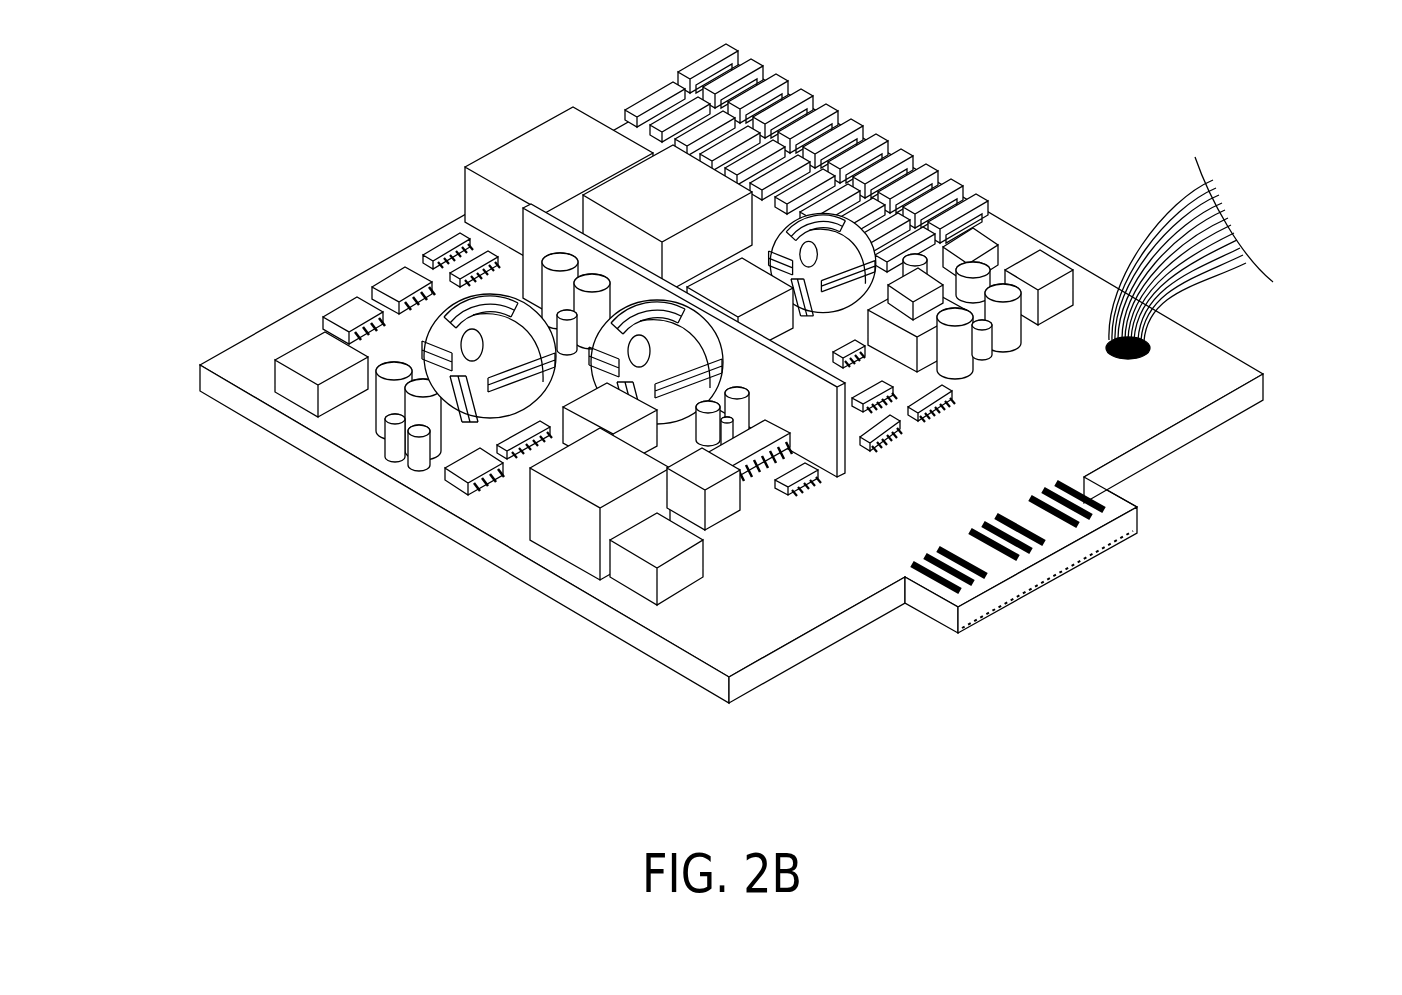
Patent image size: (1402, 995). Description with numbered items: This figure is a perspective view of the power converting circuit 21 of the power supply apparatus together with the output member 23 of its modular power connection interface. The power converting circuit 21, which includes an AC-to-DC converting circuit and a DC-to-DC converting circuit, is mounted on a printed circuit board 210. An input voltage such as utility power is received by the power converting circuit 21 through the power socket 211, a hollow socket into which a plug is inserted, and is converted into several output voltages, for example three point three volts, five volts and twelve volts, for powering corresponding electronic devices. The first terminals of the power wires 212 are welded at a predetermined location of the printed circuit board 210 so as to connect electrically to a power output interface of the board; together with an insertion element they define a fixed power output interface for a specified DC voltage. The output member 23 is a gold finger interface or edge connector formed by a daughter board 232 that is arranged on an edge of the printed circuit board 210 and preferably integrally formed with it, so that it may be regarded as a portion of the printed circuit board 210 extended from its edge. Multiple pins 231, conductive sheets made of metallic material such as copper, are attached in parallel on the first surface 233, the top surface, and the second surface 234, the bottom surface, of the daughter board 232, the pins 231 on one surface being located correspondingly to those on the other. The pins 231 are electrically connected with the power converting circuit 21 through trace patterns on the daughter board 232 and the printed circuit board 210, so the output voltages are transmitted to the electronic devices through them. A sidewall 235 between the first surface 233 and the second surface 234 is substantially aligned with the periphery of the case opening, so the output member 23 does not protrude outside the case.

The power converting circuit 21 is at (736, 387).
The printed circuit board 210 is at (582, 598).
The power socket 211 is at (540, 147).
The power wires 212 is at (1167, 210).
The output member 23 is at (1050, 603).
The pins 231 is at (1205, 491).
The daughter board 232 is at (940, 607).
The first surface 233 is at (907, 603).
The second surface 234 is at (953, 633).
The sidewall 235 is at (1058, 565).